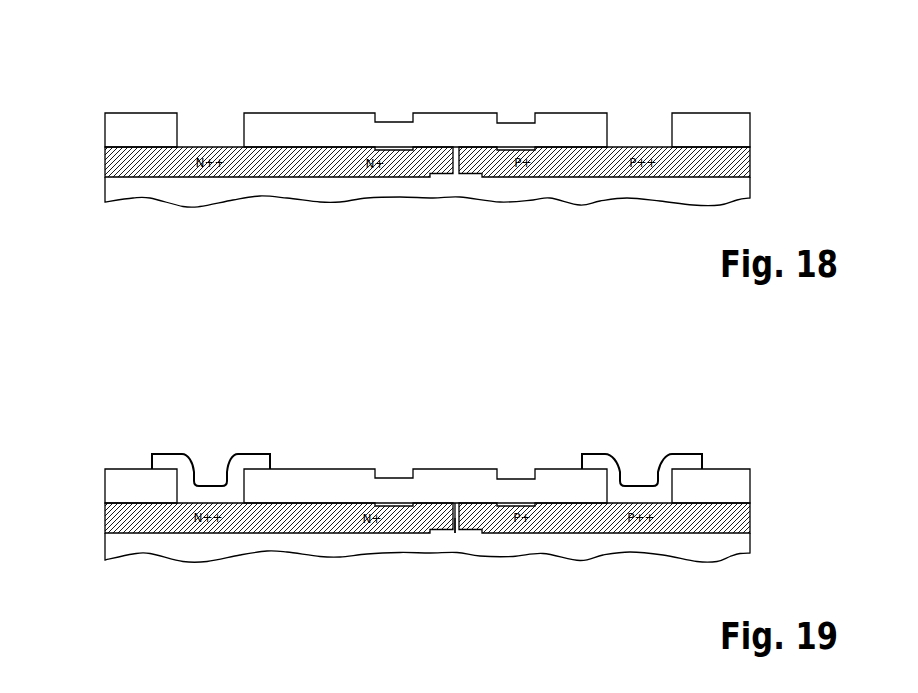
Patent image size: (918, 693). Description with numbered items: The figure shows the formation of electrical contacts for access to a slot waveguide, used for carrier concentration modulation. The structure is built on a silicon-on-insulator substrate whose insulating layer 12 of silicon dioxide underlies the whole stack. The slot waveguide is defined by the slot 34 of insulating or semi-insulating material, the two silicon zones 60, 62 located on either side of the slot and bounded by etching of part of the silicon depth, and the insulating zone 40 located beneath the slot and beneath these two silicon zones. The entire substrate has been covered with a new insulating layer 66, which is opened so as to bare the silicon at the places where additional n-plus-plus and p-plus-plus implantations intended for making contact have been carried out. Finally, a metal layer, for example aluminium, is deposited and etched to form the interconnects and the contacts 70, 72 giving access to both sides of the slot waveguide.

In FIG. 18, the insulating layer 12 is at (120, 183).
In FIG. 19, the insulating layer 12 is at (120, 548).
In FIG. 19, the slot 34 is at (455, 503).
In FIG. 19, the insulating zone 40 is at (455, 533).
In FIG. 19, the silicon zone 60 is at (440, 518).
In FIG. 19, the silicon zone 62 is at (467, 515).
In FIG. 18, the insulating layer 66 is at (328, 122).
In FIG. 19, the insulating layer 66 is at (385, 488).
In FIG. 19, the contact 70 is at (185, 467).
In FIG. 19, the contact 72 is at (610, 462).